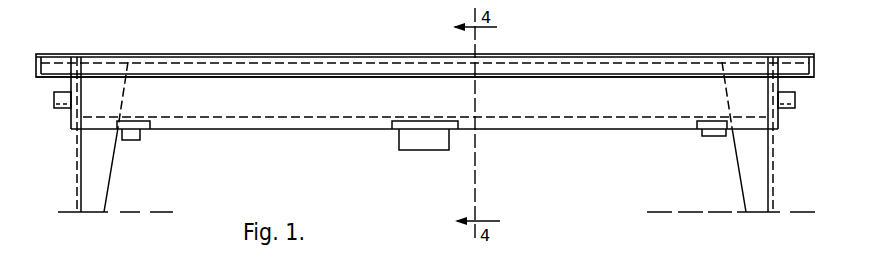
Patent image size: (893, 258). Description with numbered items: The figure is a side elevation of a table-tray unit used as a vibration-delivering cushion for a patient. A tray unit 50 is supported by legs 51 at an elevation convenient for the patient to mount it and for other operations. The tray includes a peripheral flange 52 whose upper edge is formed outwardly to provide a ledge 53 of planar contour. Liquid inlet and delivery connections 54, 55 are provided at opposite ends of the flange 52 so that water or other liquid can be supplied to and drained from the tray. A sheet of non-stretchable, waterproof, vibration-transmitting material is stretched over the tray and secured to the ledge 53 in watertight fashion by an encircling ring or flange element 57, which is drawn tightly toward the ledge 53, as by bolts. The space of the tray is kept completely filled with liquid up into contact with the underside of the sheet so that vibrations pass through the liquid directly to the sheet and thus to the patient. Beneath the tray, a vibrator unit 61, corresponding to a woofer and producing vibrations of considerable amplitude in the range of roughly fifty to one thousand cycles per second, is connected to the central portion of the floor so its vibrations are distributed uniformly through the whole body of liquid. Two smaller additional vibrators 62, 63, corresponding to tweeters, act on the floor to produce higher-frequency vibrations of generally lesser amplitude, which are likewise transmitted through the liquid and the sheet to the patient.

The tray unit 50 is at (575, 129).
The legs 51 is at (102, 177).
The peripheral flange 52 is at (256, 97).
The ledge 53 is at (353, 68).
The liquid inlet connection 54 is at (787, 109).
The liquid delivery connection 55 is at (62, 109).
The encircling ring or flange element 57 is at (298, 54).
The vibrator unit 61 is at (413, 141).
The additional vibrator 62 is at (702, 133).
The additional vibrator 63 is at (142, 137).